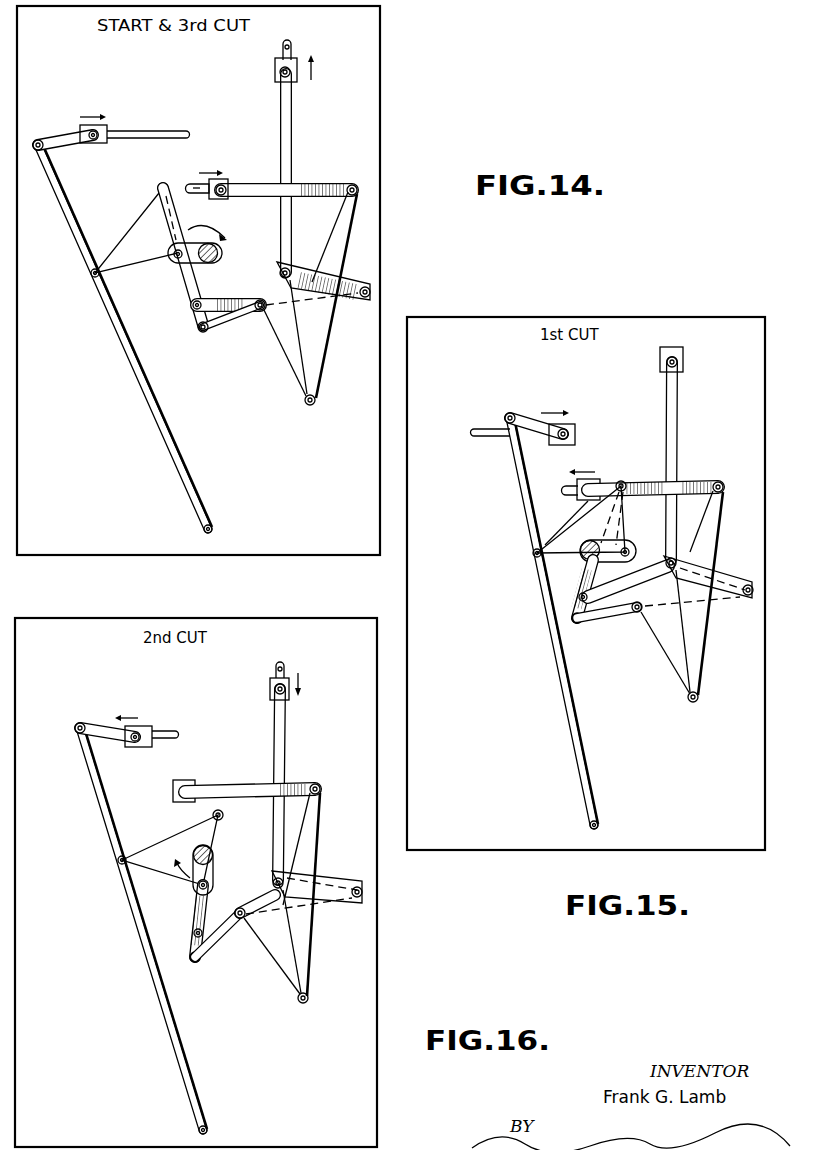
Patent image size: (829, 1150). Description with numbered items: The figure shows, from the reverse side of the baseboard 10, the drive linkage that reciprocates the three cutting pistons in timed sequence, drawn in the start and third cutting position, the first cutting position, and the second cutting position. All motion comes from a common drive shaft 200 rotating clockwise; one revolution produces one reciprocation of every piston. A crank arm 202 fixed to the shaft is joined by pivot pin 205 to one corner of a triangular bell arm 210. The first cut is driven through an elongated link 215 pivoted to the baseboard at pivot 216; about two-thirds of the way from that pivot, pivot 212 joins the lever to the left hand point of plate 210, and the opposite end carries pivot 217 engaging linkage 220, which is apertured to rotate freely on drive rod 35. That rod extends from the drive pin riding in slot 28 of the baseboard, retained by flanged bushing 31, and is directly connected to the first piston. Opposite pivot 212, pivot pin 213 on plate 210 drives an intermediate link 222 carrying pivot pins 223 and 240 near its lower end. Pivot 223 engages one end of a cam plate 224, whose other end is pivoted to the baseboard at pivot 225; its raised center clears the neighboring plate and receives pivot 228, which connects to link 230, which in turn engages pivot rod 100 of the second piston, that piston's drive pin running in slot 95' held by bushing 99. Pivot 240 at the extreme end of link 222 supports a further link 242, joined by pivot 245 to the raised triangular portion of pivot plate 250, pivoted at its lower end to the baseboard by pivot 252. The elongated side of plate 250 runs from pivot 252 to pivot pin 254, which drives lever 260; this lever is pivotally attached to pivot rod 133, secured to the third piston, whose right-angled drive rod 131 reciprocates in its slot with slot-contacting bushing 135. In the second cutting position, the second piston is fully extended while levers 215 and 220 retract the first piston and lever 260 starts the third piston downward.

In FIG. 14, the baseboard 10 is at (372, 110).
In FIG. 15, the baseboard 10 is at (660, 328).
In FIG. 16, the baseboard 10 is at (78, 625).
In FIG. 14, the slot 28 is at (145, 128).
In FIG. 15, the slot 28 is at (482, 429).
In FIG. 16, the slot 28 is at (164, 732).
In FIG. 15, the bushing 31 is at (578, 434).
In FIG. 15, the drive rod 35 is at (571, 406).
In FIG. 14, the slot 95' is at (308, 55).
In FIG. 16, the slot 95' is at (301, 673).
In FIG. 14, the bushing 99 is at (275, 66).
In FIG. 15, the bushing 99 is at (683, 354).
In FIG. 16, the bushing 99 is at (269, 685).
In FIG. 14, the pivot rod 100 is at (276, 80).
In FIG. 15, the pivot rod 100 is at (683, 366).
In FIG. 16, the pivot rod 100 is at (289, 696).
In FIG. 14, the drive rod 131 is at (196, 195).
In FIG. 15, the drive rod 131 is at (565, 486).
In FIG. 14, the pivot rod 133 is at (226, 198).
In FIG. 15, the pivot rod 133 is at (593, 482).
In FIG. 14, the bushing 135 is at (227, 180).
In FIG. 15, the bushing 135 is at (583, 499).
In FIG. 16, the bushing 135 is at (175, 801).
In FIG. 14, the drive shaft 200 is at (218, 258).
In FIG. 15, the drive shaft 200 is at (577, 556).
In FIG. 16, the drive shaft 200 is at (214, 852).
In FIG. 14, the crank arm 202 is at (200, 264).
In FIG. 15, the crank arm 202 is at (612, 540).
In FIG. 16, the crank arm 202 is at (217, 871).
In FIG. 14, the pivot pin 205 is at (176, 262).
In FIG. 15, the pivot pin 205 is at (627, 547).
In FIG. 16, the pivot pin 205 is at (212, 889).
In FIG. 14, the triangular bell arm 210 is at (150, 256).
In FIG. 15, the triangular bell arm 210 is at (581, 556).
In FIG. 16, the triangular bell arm 210 is at (169, 863).
In FIG. 14, the pivot 212 is at (91, 279).
In FIG. 15, the pivot 212 is at (531, 556).
In FIG. 16, the pivot 212 is at (117, 864).
In FIG. 14, the pivot pin 213 is at (166, 182).
In FIG. 15, the pivot pin 213 is at (625, 481).
In FIG. 16, the pivot pin 213 is at (224, 816).
In FIG. 14, the elongated link 215 is at (175, 448).
In FIG. 15, the elongated link 215 is at (566, 692).
In FIG. 16, the elongated link 215 is at (165, 1023).
In FIG. 14, the pivot 216 is at (213, 529).
In FIG. 15, the pivot 216 is at (600, 826).
In FIG. 16, the pivot 216 is at (209, 1128).
In FIG. 14, the pivot 217 is at (37, 138).
In FIG. 15, the pivot 217 is at (512, 411).
In FIG. 16, the pivot 217 is at (78, 722).
In FIG. 14, the linkage 220 is at (75, 148).
In FIG. 15, the linkage 220 is at (532, 420).
In FIG. 16, the linkage 220 is at (102, 720).
In FIG. 15, the intermediate link 222 is at (575, 585).
In FIG. 16, the intermediate link 222 is at (192, 908).
In FIG. 14, the pivot pin 223 is at (190, 310).
In FIG. 15, the pivot pin 223 is at (602, 591).
In FIG. 16, the pivot pin 223 is at (193, 933).
In FIG. 14, the cam plate 224 is at (353, 302).
In FIG. 15, the cam plate 224 is at (735, 598).
In FIG. 16, the cam plate 224 is at (329, 887).
In FIG. 14, the pivot 225 is at (371, 286).
In FIG. 15, the pivot 225 is at (758, 572).
In FIG. 16, the pivot 225 is at (357, 901).
In FIG. 14, the pivot 228 is at (291, 268).
In FIG. 15, the pivot 228 is at (678, 561).
In FIG. 16, the pivot 228 is at (285, 908).
In FIG. 14, the link 230 is at (288, 137).
In FIG. 15, the link 230 is at (678, 438).
In FIG. 16, the link 230 is at (275, 754).
In FIG. 14, the pivot 240 is at (195, 332).
In FIG. 15, the pivot 240 is at (571, 624).
In FIG. 16, the pivot 240 is at (195, 964).
In FIG. 14, the link 242 is at (226, 322).
In FIG. 15, the link 242 is at (610, 618).
In FIG. 16, the link 242 is at (217, 945).
In FIG. 15, the pivot 245 is at (644, 609).
In FIG. 14, the pivot plate 250 is at (313, 340).
In FIG. 15, the pivot plate 250 is at (695, 647).
In FIG. 16, the pivot plate 250 is at (308, 960).
In FIG. 14, the pivot 252 is at (307, 407).
In FIG. 15, the pivot 252 is at (690, 703).
In FIG. 16, the pivot 252 is at (301, 1006).
In FIG. 14, the pivot pin 254 is at (352, 184).
In FIG. 15, the pivot pin 254 is at (725, 488).
In FIG. 16, the pivot pin 254 is at (324, 786).
In FIG. 14, the lever 260 is at (318, 194).
In FIG. 15, the lever 260 is at (693, 484).
In FIG. 16, the lever 260 is at (236, 786).